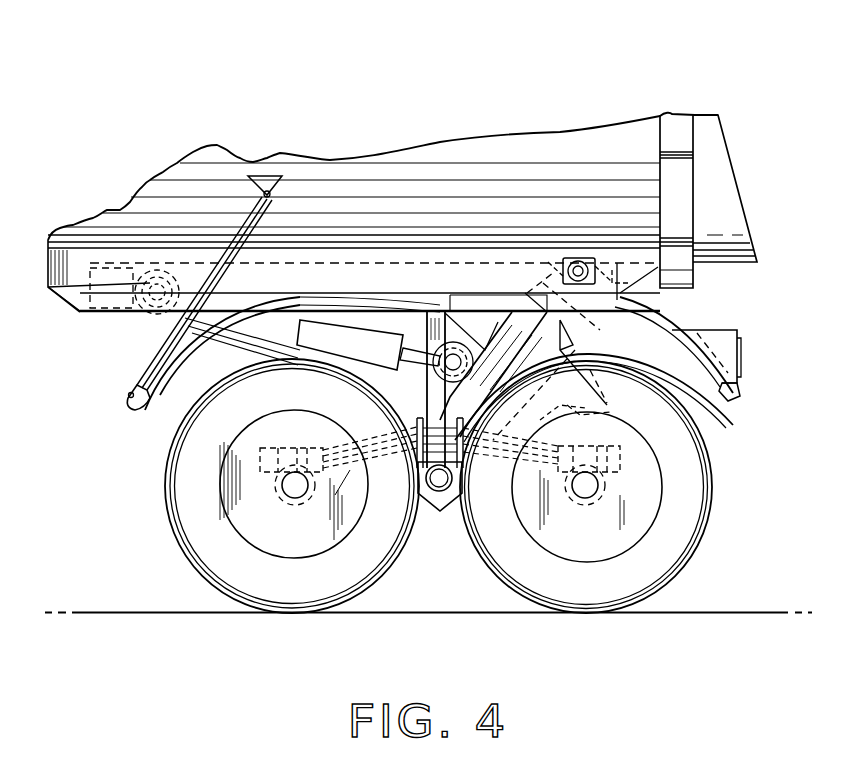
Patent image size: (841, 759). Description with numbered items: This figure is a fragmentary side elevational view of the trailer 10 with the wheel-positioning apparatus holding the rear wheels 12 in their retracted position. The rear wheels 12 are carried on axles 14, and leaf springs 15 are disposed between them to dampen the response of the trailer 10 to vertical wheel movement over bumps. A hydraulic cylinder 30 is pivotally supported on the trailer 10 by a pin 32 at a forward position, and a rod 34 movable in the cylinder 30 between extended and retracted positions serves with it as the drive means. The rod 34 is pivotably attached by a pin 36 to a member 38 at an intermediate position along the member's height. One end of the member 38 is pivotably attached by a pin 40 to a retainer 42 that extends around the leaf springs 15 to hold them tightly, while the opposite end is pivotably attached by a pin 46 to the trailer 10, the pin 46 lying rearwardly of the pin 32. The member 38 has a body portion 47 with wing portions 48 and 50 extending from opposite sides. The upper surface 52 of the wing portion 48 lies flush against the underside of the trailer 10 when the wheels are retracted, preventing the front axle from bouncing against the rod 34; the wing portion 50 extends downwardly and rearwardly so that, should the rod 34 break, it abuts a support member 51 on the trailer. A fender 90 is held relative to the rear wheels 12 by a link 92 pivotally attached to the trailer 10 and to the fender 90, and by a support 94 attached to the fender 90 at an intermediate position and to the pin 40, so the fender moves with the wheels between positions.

The trailer 10 is at (402, 171).
The rear wheels 12 is at (434, 486).
The axles 14 is at (432, 491).
The leaf springs 15 is at (440, 484).
The hydraulic cylinder 30 is at (312, 319).
The pin 32 is at (106, 317).
The rod 34 is at (441, 320).
The pin 36 is at (551, 234).
The member 38 is at (596, 369).
The pin 40 is at (428, 481).
The retainer 42 is at (493, 481).
The pin 46 is at (593, 179).
The body portion 47 is at (556, 414).
The wing portion 48 is at (550, 267).
The wing portion 50 is at (729, 385).
The support member 51 is at (715, 289).
The upper surface 52 is at (515, 212).
The fender 90 is at (361, 202).
The link 92 is at (177, 278).
The support 94 is at (292, 353).